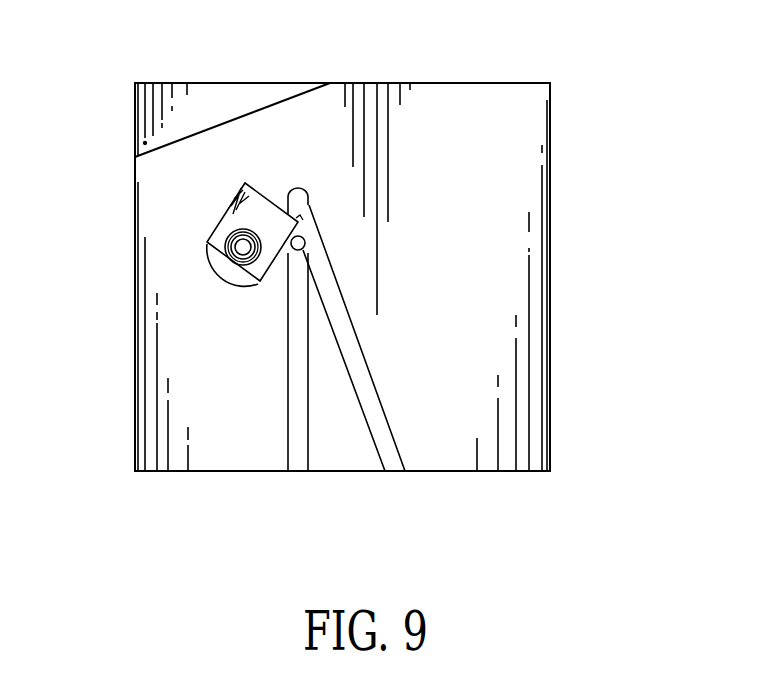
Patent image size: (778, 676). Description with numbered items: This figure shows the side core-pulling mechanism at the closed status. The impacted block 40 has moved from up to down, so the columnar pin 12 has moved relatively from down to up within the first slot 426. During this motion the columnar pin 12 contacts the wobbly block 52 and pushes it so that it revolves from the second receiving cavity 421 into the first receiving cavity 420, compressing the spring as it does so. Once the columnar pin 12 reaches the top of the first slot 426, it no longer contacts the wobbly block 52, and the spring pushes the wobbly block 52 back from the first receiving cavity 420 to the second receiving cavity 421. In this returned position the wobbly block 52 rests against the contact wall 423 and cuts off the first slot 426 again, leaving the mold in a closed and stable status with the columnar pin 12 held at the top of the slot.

The impacted block 40 is at (508, 257).
The first receiving cavity 420 is at (246, 184).
The wobbly block 52 is at (210, 244).
The second receiving cavity 421 is at (296, 190).
The columnar pin 12 is at (305, 241).
The contact wall 423 is at (279, 256).
The first slot 426 is at (300, 463).